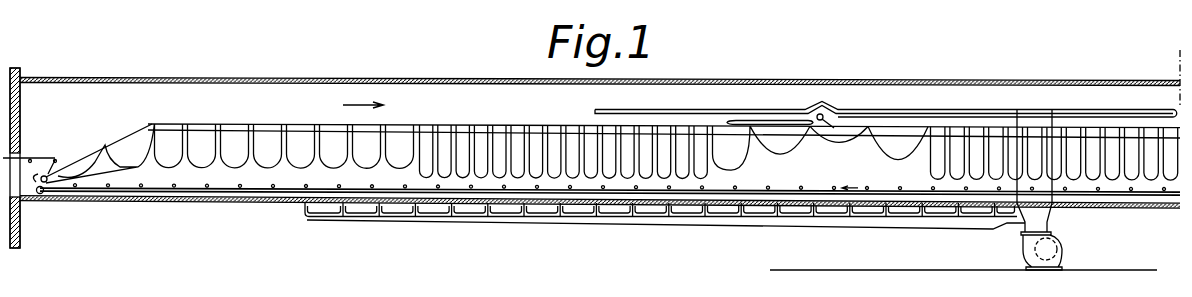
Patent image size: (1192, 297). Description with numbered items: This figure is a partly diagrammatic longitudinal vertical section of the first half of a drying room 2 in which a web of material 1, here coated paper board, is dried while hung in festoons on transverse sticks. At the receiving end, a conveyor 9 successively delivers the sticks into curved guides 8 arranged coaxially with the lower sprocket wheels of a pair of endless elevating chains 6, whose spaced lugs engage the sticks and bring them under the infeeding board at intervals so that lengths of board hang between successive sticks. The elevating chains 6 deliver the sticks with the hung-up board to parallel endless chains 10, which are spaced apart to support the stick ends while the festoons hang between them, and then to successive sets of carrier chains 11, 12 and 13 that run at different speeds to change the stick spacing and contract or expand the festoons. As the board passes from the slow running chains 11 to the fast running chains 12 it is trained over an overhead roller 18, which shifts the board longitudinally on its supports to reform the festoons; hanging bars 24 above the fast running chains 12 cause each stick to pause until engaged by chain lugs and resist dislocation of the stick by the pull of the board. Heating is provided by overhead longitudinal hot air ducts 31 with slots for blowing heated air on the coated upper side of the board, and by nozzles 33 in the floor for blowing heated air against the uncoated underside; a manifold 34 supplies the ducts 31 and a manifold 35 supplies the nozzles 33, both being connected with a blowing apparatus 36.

The web of material 1 is at (49, 156).
The drying room 2 is at (393, 78).
The endless elevating chains 6 is at (132, 134).
The curved guides 8 is at (33, 184).
The conveyor 9 is at (192, 184).
The parallel endless chains 10 is at (239, 123).
The slow running carrier chains 11 is at (517, 124).
The fast running carrier chains 12 is at (816, 129).
The endless carrier chains 13 is at (1135, 127).
The overhead roller 18 is at (826, 111).
The hanging bars 24 is at (741, 121).
The overhead longitudinal hot air ducts 31 is at (937, 109).
The nozzles 33 is at (378, 205).
The manifold 34 is at (1037, 120).
The manifold 35 is at (943, 222).
The blowing apparatus 36 is at (1052, 250).